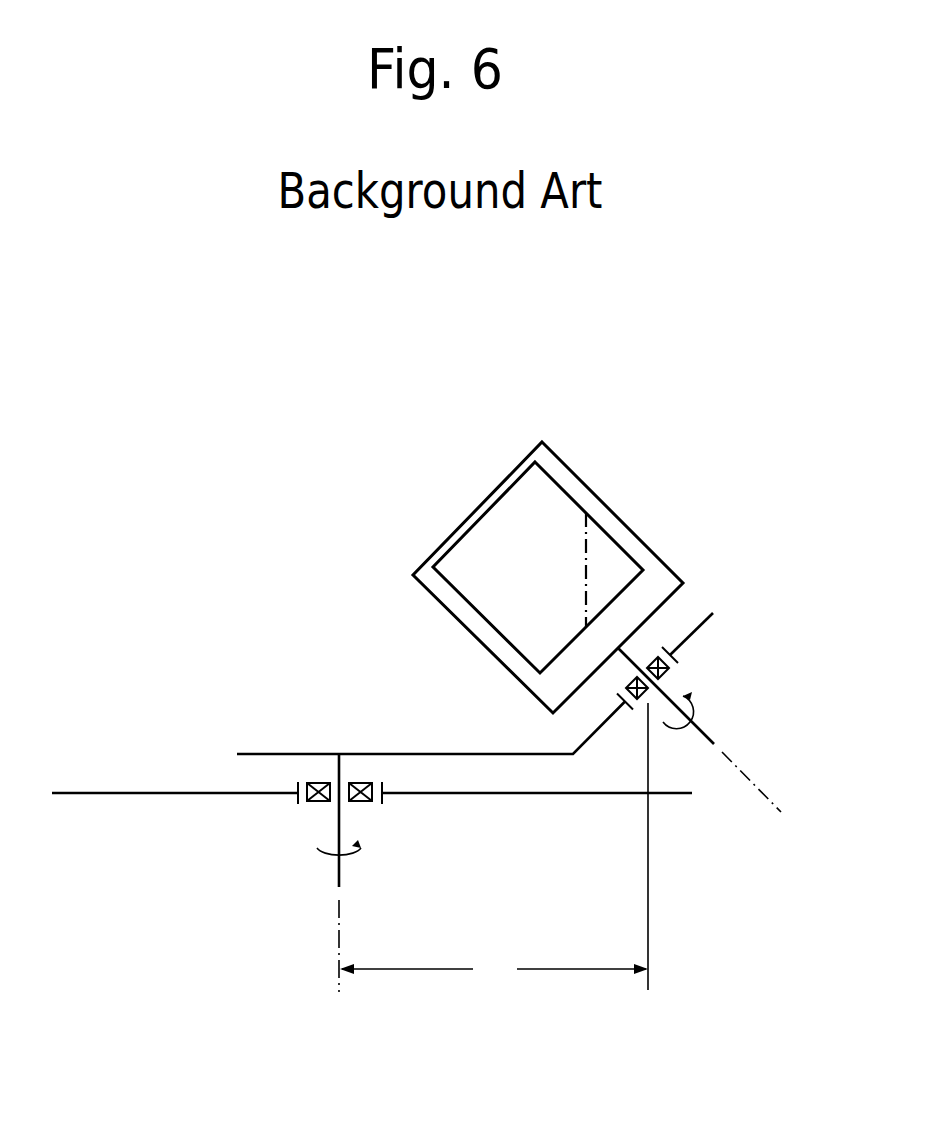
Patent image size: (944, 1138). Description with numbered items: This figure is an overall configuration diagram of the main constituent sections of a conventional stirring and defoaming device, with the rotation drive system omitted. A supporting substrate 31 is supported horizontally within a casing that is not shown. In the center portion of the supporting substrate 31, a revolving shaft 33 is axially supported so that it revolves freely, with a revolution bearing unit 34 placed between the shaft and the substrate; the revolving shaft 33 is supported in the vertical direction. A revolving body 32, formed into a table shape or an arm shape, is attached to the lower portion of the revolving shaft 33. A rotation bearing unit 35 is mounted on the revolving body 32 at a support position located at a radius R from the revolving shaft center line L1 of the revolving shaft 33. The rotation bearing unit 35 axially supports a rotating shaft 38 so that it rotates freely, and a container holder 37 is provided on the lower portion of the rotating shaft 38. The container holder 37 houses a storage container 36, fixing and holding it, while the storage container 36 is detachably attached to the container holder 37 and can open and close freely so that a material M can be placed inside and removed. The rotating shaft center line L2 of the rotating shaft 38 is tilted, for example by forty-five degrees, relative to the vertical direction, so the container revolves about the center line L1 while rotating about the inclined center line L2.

The supporting substrate 31 is at (157, 793).
The revolving body 32 is at (412, 753).
The revolving shaft 33 is at (340, 820).
The revolution bearing unit 34 is at (318, 803).
The rotation bearing unit 35 is at (662, 678).
The storage container 36 is at (485, 600).
The container holder 37 is at (567, 477).
The rotating shaft 38 is at (700, 728).
The material M is at (607, 557).
The revolving shaft center line L1 is at (338, 950).
The rotating shaft center line L2 is at (777, 807).
The radius R is at (494, 846).